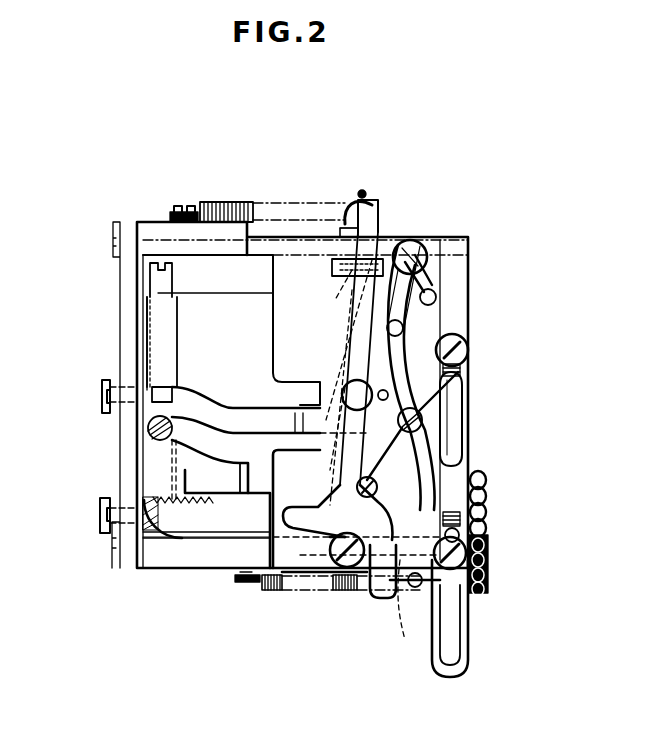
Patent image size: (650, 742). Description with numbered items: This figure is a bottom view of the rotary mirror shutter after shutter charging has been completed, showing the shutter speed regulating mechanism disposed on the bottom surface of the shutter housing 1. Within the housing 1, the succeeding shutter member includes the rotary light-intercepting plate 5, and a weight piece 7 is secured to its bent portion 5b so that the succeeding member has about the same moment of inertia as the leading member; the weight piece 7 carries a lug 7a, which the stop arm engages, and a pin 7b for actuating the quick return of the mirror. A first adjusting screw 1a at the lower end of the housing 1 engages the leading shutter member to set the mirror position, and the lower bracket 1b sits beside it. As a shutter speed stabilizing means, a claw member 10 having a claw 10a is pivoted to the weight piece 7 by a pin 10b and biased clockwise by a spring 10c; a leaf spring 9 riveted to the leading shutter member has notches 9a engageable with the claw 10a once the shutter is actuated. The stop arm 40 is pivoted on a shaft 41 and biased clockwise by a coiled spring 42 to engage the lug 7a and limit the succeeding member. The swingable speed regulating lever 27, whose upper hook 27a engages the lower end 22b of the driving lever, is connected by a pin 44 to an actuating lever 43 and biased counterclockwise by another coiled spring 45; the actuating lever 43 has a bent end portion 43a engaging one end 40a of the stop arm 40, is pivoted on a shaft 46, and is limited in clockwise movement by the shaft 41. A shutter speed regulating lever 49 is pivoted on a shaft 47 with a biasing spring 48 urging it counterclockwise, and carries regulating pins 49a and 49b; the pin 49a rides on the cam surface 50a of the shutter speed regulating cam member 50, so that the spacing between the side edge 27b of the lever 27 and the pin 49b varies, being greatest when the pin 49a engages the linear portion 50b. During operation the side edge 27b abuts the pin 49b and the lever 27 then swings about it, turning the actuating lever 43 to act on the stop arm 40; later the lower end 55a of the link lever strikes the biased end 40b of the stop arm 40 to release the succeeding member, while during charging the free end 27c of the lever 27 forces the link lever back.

The shutter housing 1 is at (162, 566).
The first adjusting screw 1a is at (103, 385).
The lower mounting bracket 1b is at (106, 510).
The rotary light-intercepting plate 5 is at (200, 305).
The bent portion 5b is at (150, 333).
The weight piece 7 is at (166, 343).
The lug (pin) 7a is at (170, 393).
The pin 7b is at (158, 280).
The leaf spring 9 is at (195, 530).
The notches 9a is at (198, 505).
The claw member 10 is at (198, 464).
The claw 10a is at (252, 488).
The pin 10b is at (150, 428).
The spring 10c is at (146, 470).
The stop 22b is at (356, 230).
The swingable speed regulating lever 27 is at (352, 328).
The arm hook 27a is at (372, 214).
The side edge 27b is at (324, 460).
The free end 27c is at (388, 600).
The stop arm 40 is at (233, 410).
The one end of stop arm 40a is at (341, 267).
The biased end 40b is at (434, 620).
The shaft 41 is at (470, 346).
The coiled spring 42 is at (272, 592).
The actuating lever 43 is at (323, 483).
The bent end portion 43a is at (350, 291).
The pin 44 is at (344, 386).
The coiled spring 45 is at (325, 202).
The shaft 46 is at (343, 594).
The pivot pin 47 is at (417, 255).
The biasing spring 48 is at (434, 278).
The shutter speed regulating lever 49 is at (406, 313).
The regulating pin 49a is at (420, 418).
The regulating pin 49b is at (411, 588).
The shutter speed regulating cam member 50 is at (465, 450).
The cam surface 50a is at (482, 488).
The linear portion 50b is at (482, 524).
The lower end of link lever 55a is at (378, 592).